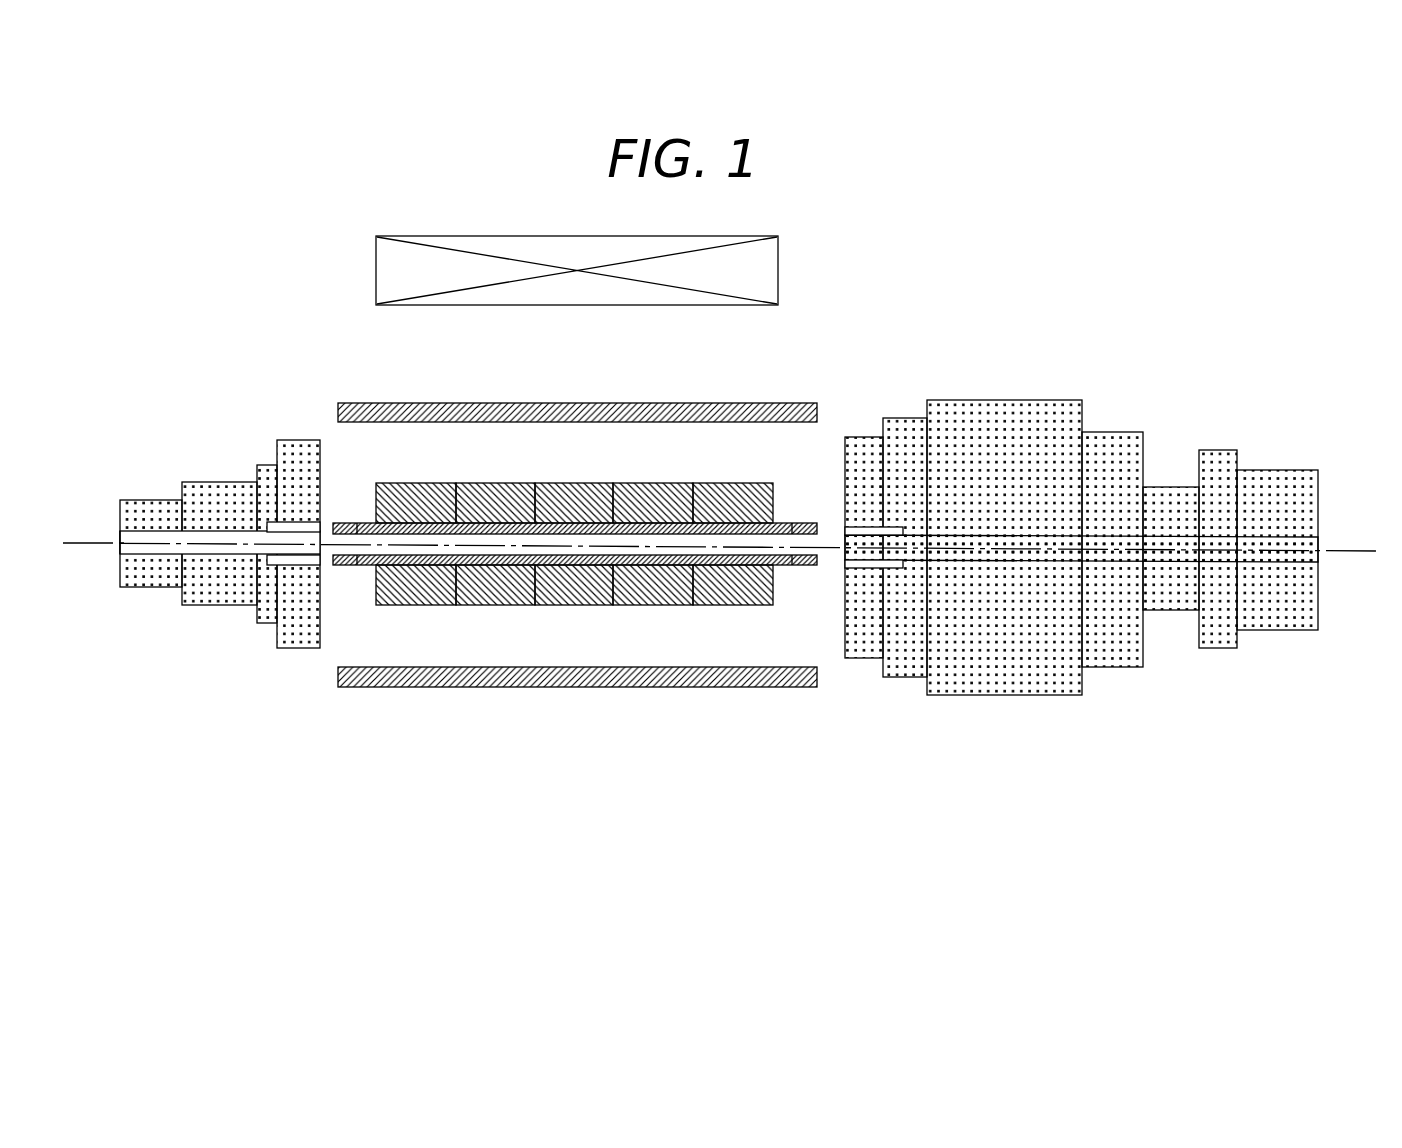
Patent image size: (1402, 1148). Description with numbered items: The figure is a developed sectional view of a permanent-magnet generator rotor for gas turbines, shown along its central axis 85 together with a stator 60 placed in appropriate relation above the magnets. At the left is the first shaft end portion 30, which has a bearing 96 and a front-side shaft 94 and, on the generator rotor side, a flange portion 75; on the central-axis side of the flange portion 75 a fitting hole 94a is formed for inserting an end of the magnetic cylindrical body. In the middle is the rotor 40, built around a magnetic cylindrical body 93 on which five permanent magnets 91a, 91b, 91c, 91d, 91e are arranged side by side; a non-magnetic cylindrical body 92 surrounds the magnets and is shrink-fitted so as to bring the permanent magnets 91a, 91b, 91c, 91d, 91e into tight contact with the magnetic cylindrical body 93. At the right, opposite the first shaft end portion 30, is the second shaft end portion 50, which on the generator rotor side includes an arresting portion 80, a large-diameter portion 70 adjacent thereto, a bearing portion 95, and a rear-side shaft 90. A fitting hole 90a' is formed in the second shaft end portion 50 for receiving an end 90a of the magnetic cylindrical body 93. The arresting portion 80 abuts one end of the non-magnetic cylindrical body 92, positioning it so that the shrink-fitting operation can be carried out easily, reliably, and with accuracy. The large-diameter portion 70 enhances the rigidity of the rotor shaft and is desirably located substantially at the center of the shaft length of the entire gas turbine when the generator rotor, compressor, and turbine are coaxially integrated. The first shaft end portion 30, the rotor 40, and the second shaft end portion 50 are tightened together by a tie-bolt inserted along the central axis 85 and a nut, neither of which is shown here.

The first shaft end portion 30 is at (184, 599).
The rotor unit 40 is at (579, 601).
The second shaft end portion 50 is at (1072, 583).
The stator 60 is at (770, 273).
The large-diameter portion 70 is at (1005, 400).
The flange portion 75 is at (298, 440).
The arresting portion 80 is at (884, 420).
The center axis 85 is at (122, 552).
The rear-side shaft 90 is at (1275, 470).
The end of the magnetic cylindrical body 90a is at (589, 582).
The fitting hole 90a' is at (865, 637).
The permanent magnet 91a is at (415, 488).
The permanent magnet 91b is at (495, 488).
The permanent magnet 91c is at (573, 488).
The permanent magnet 91d is at (652, 488).
The permanent magnet 91e is at (730, 488).
The non-magnetic cylindrical body 92 is at (747, 403).
The magnetic cylindrical body 93 is at (783, 525).
The front-side shaft 94 is at (217, 482).
The fitting hole 94a is at (293, 563).
The bearing portion 95 is at (1170, 487).
The bearing 96 is at (149, 500).